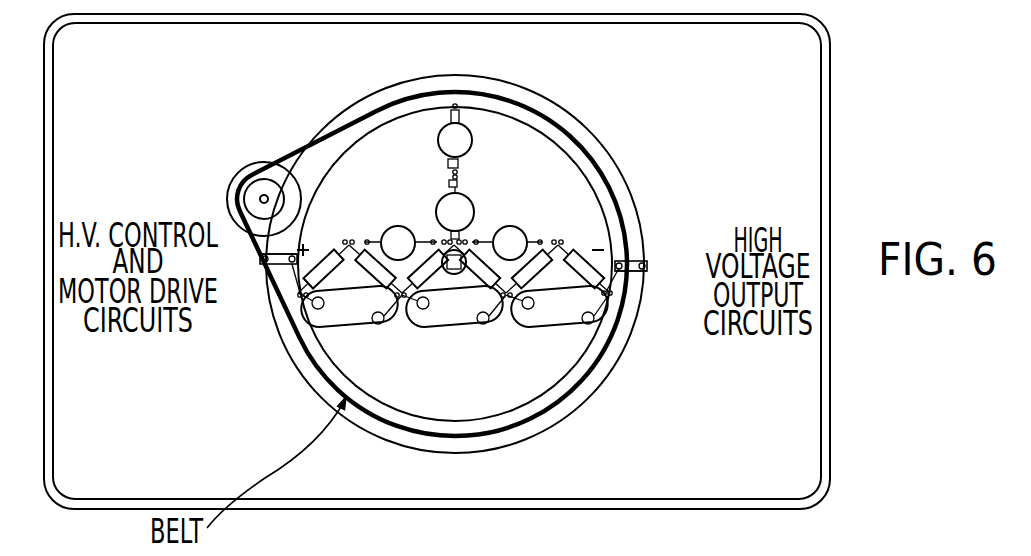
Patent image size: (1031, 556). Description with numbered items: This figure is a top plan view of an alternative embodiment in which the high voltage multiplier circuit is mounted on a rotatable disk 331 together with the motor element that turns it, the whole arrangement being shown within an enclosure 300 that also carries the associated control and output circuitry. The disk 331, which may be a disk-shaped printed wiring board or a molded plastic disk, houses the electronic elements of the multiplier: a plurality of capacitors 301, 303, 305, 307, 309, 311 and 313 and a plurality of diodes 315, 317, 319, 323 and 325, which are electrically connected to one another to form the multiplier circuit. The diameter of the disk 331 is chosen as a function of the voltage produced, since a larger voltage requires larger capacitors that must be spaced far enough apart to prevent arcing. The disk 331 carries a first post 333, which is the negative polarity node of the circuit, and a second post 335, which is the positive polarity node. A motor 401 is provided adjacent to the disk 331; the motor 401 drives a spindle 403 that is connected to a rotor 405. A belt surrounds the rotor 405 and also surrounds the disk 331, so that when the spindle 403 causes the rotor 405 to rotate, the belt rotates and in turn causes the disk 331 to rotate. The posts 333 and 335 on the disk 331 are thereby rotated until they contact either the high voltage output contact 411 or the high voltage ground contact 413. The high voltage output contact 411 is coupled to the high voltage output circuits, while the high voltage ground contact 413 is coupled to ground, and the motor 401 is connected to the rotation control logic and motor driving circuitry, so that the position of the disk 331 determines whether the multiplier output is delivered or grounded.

The housing 300 is at (807, 66).
The capacitor 301 is at (462, 143).
The capacitor 303 is at (462, 206).
The capacitor 305 is at (398, 226).
The capacitor 307 is at (519, 230).
The capacitor 309 is at (352, 313).
The capacitor 311 is at (452, 316).
The capacitor 313 is at (552, 315).
The diode 315 is at (315, 256).
The diode 317 is at (377, 273).
The diode 319 is at (402, 298).
The diode 323 is at (538, 276).
The diode 325 is at (507, 300).
The disk 331 is at (604, 223).
The first post 333 is at (622, 260).
The second post 335 is at (263, 270).
The motor 401 is at (243, 190).
The spindle 403 is at (250, 166).
The rotor 405 is at (259, 203).
The high voltage output contact 411 is at (625, 274).
The high voltage ground contact 413 is at (258, 262).